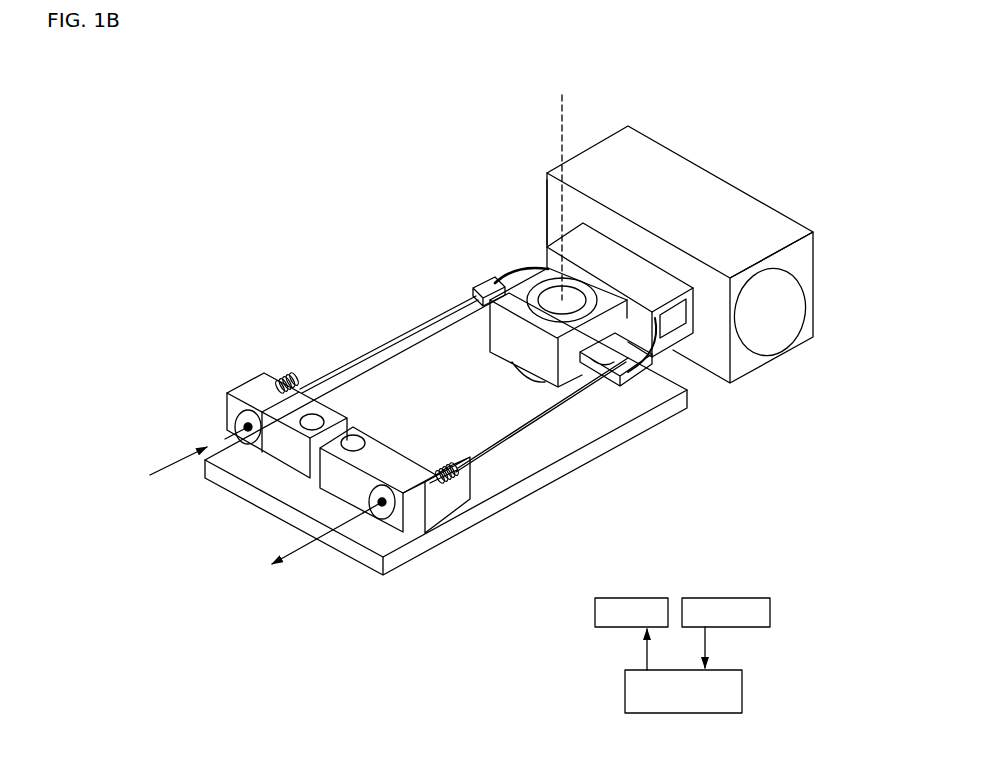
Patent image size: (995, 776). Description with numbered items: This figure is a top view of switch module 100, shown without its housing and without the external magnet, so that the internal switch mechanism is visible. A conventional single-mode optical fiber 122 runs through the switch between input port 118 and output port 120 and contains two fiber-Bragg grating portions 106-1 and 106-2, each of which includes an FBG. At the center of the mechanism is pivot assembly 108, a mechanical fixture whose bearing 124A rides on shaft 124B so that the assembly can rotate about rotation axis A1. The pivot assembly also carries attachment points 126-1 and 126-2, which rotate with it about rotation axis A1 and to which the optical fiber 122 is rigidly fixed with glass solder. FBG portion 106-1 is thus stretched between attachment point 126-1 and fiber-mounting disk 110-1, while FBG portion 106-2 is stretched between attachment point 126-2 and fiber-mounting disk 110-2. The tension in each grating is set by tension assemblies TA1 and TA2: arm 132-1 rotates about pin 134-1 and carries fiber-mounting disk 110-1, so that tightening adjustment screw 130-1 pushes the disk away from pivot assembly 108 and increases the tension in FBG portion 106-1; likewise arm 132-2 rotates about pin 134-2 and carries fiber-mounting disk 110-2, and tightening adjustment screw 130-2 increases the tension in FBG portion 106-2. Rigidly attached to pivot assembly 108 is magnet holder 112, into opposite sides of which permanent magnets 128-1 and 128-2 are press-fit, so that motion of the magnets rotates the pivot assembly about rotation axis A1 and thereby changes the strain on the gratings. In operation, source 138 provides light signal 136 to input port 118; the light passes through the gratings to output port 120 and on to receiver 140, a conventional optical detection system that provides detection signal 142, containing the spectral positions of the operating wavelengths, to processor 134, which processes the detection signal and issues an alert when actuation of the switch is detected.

The switch module 100 is at (197, 106).
The rotation axis A1 is at (593, 83).
The output port 120 is at (365, 522).
The magnet holder 112 is at (753, 197).
The permanent magnet 128-2 is at (791, 320).
The permanent magnet 128-1 is at (530, 193).
The pivot assembly 108 is at (455, 293).
The bearing 124A is at (590, 308).
The shaft 124B is at (560, 303).
The optical fiber 122 is at (535, 272).
The attachment point 126-1 is at (480, 280).
The attachment point 126-2 is at (647, 363).
The fiber-Bragg grating portion 106-1 is at (397, 327).
The fiber-Bragg grating portion 106-2 is at (503, 447).
The adjustment screw 130-1 is at (312, 373).
The adjustment screw 130-2 is at (465, 470).
The arm 132-1 is at (237, 390).
The arm 132-2 is at (417, 517).
The pin 134-1 is at (335, 400).
The pin 134-2 is at (362, 445).
The fiber-mounting disk 110-1 is at (247, 444).
The fiber-mounting disk 110-2 is at (380, 519).
The input port 118 is at (223, 428).
The light signal 136 is at (168, 467).
The tension assembly TA1 is at (218, 365).
The tension assembly TA2 is at (467, 543).
The source 138 is at (595, 612).
The receiver 140 is at (832, 598).
The detection signal 142 is at (707, 642).
The processor 134 is at (742, 693).